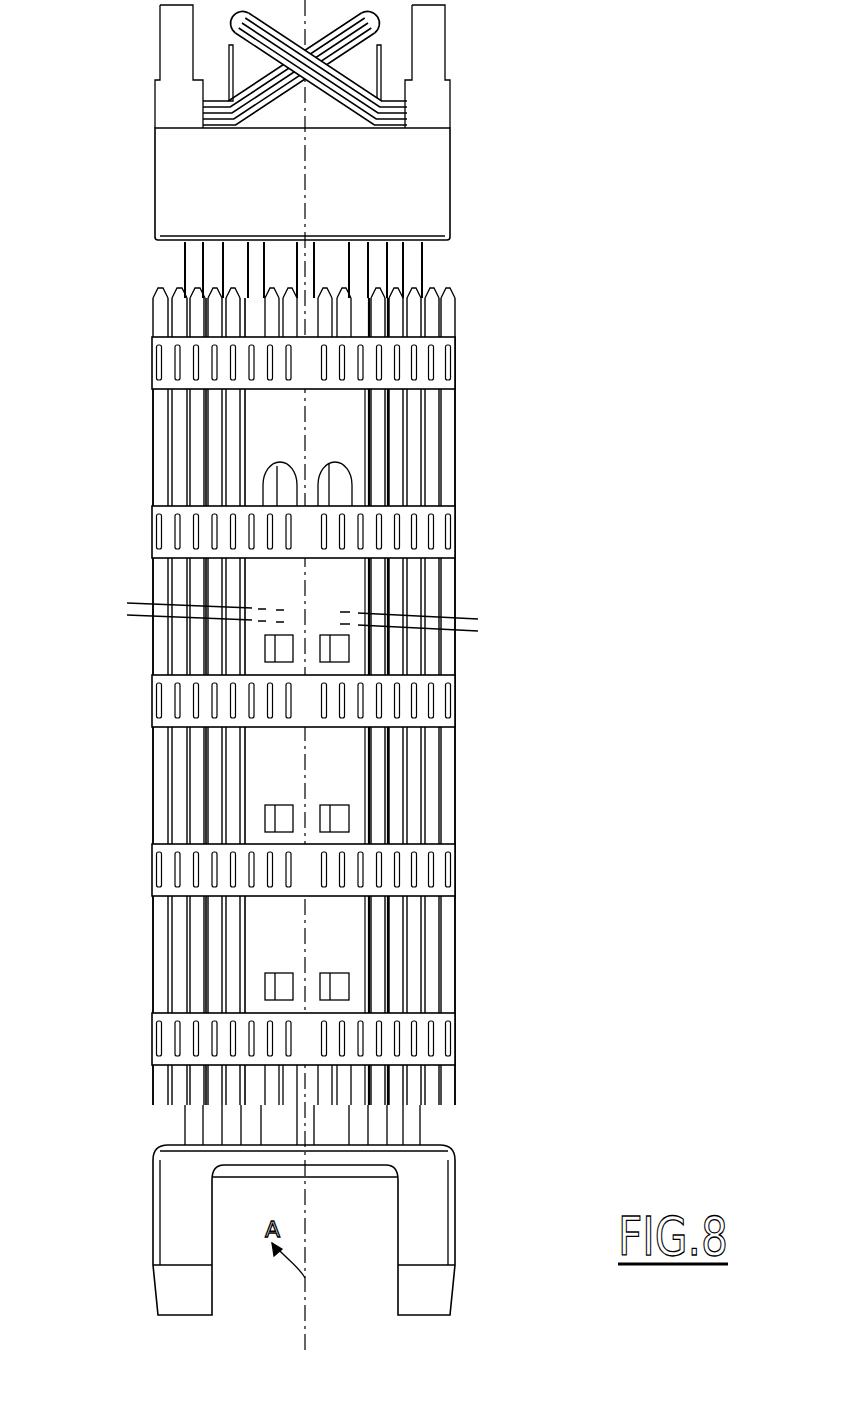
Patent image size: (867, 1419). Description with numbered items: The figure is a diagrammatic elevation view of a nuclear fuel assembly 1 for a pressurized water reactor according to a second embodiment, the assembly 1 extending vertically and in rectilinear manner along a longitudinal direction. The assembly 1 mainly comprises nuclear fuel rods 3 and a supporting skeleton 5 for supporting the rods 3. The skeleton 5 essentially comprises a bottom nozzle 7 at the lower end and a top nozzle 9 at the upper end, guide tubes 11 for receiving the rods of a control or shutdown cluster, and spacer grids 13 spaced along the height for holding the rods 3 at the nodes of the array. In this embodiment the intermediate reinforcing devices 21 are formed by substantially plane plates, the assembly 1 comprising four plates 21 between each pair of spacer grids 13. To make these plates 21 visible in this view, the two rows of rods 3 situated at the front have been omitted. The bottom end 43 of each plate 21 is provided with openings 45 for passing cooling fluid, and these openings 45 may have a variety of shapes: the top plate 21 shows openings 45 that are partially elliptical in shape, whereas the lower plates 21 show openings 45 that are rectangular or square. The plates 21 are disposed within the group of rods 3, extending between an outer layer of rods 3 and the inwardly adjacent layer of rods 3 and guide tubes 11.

The nuclear fuel assembly 1 is at (552, 578).
The nuclear fuel rods 3 is at (447, 327).
The supporting skeleton 5 is at (470, 222).
The bottom nozzle 7 is at (428, 1232).
The top nozzle 9 is at (430, 190).
The guide tubes 11 is at (235, 272).
The spacer grids 13 is at (148, 371).
The intermediate reinforcing devices 21 is at (378, 470).
The bottom end 43 is at (357, 498).
The openings 45 is at (322, 475).